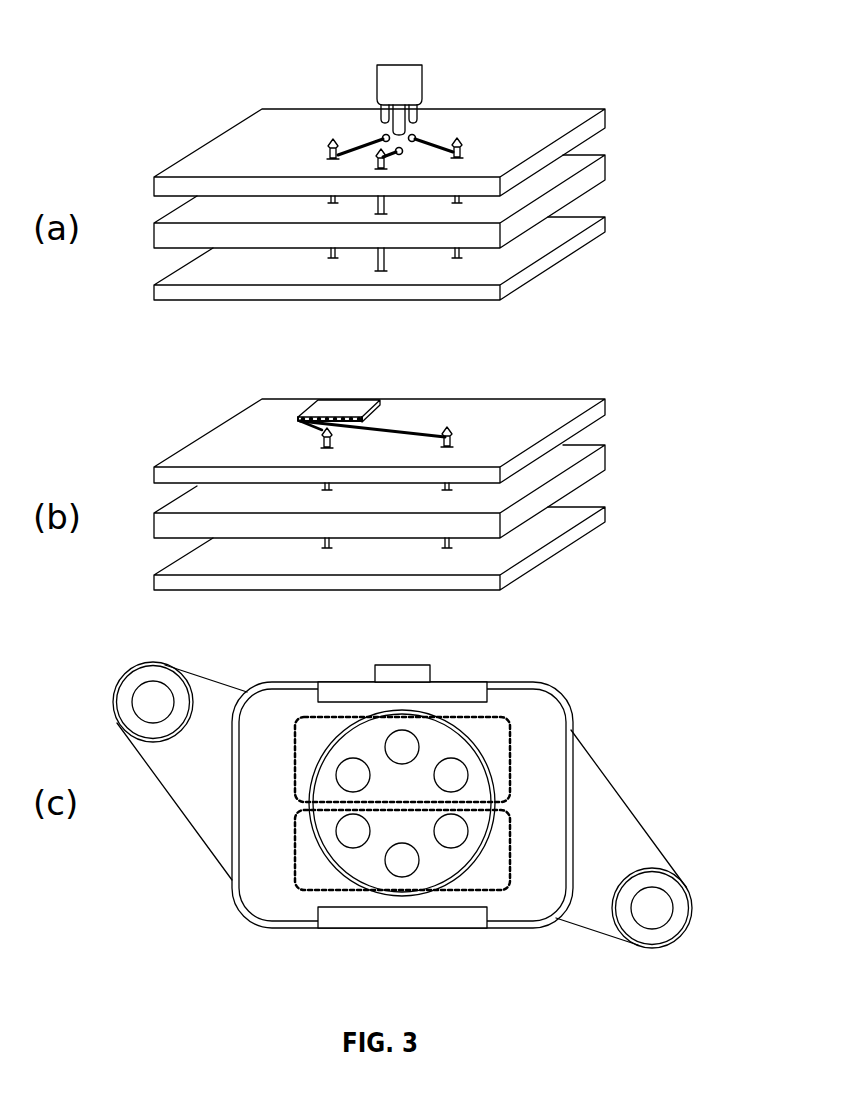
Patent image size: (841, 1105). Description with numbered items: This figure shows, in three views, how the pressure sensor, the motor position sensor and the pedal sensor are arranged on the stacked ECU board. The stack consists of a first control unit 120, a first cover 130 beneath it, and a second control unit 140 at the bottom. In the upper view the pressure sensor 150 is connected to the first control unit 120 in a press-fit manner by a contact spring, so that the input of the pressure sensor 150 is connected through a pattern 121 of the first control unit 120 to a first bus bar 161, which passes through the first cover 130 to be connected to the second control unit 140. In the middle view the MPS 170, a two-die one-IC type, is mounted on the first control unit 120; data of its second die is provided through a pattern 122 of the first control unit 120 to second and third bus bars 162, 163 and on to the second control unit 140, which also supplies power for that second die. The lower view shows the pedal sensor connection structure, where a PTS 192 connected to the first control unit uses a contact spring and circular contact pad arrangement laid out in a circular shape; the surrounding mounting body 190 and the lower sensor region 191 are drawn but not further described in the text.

The first control unit 120 is at (607, 111).
The first cover 130 is at (607, 157).
The second control unit 140 is at (607, 216).
The pressure sensor 150 is at (415, 77).
The pattern 121 is at (362, 139).
The pattern 122 is at (408, 433).
The first bus bar 161 is at (332, 137).
The second bus bar 162 is at (313, 432).
The third bus bar 163 is at (455, 427).
The MPS 170 is at (350, 408).
The housing bracket 190 is at (610, 797).
The lower region 191 is at (495, 893).
The PTS 192 is at (495, 717).